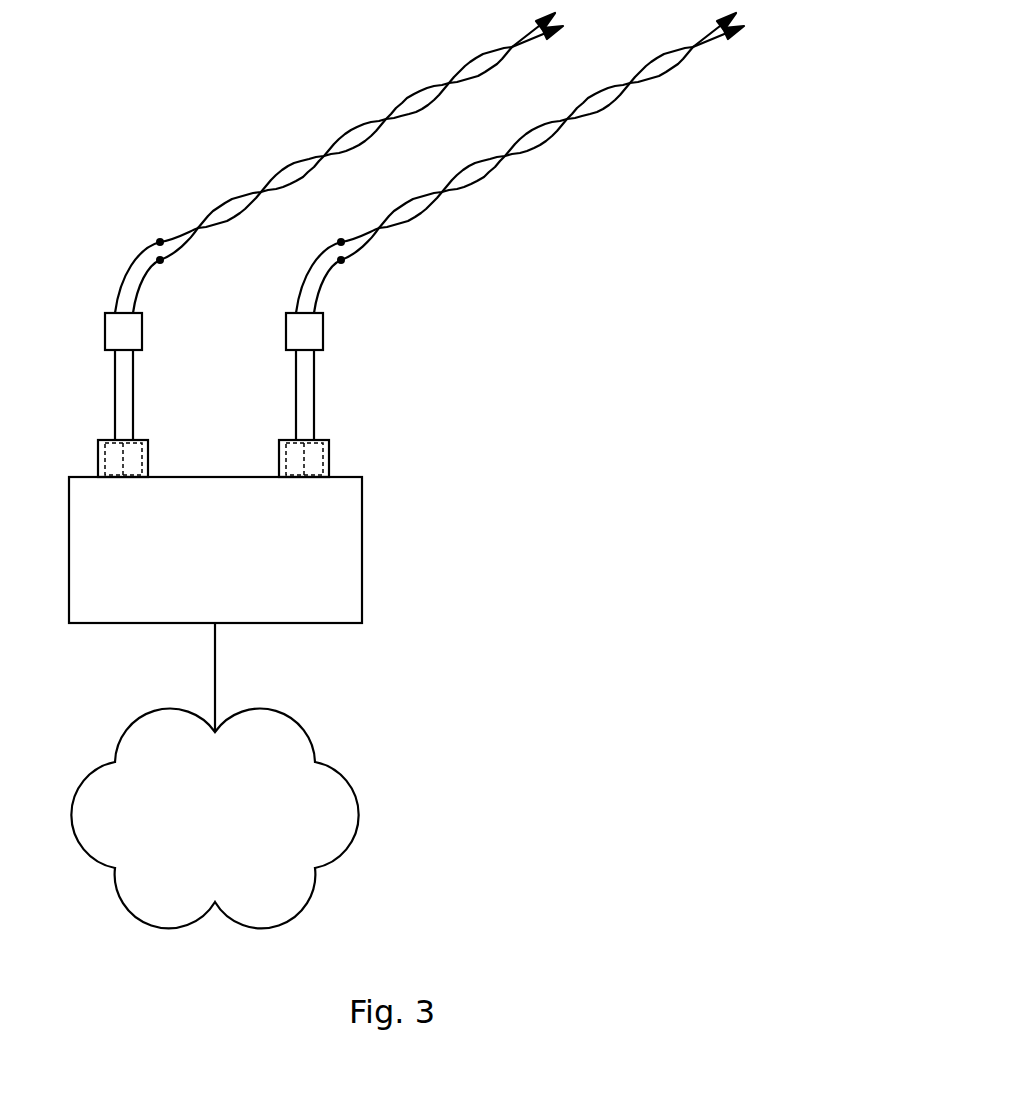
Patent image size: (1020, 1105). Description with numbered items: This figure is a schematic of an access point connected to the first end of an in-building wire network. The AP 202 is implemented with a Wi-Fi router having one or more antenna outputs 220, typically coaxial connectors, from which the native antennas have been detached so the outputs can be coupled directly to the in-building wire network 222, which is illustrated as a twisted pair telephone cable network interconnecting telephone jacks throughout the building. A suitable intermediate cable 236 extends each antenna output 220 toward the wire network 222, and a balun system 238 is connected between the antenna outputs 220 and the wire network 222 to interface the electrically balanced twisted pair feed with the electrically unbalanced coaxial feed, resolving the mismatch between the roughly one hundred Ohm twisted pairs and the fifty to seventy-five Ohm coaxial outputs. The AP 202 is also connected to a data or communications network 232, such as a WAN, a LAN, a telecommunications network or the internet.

The AP 202 is at (362, 549).
The antenna outputs 220 is at (150, 458).
The in-building wire network 222 is at (256, 148).
The data or communications network 232 is at (234, 827).
The intermediate cable 236 is at (141, 283).
The balun system 238 is at (105, 329).